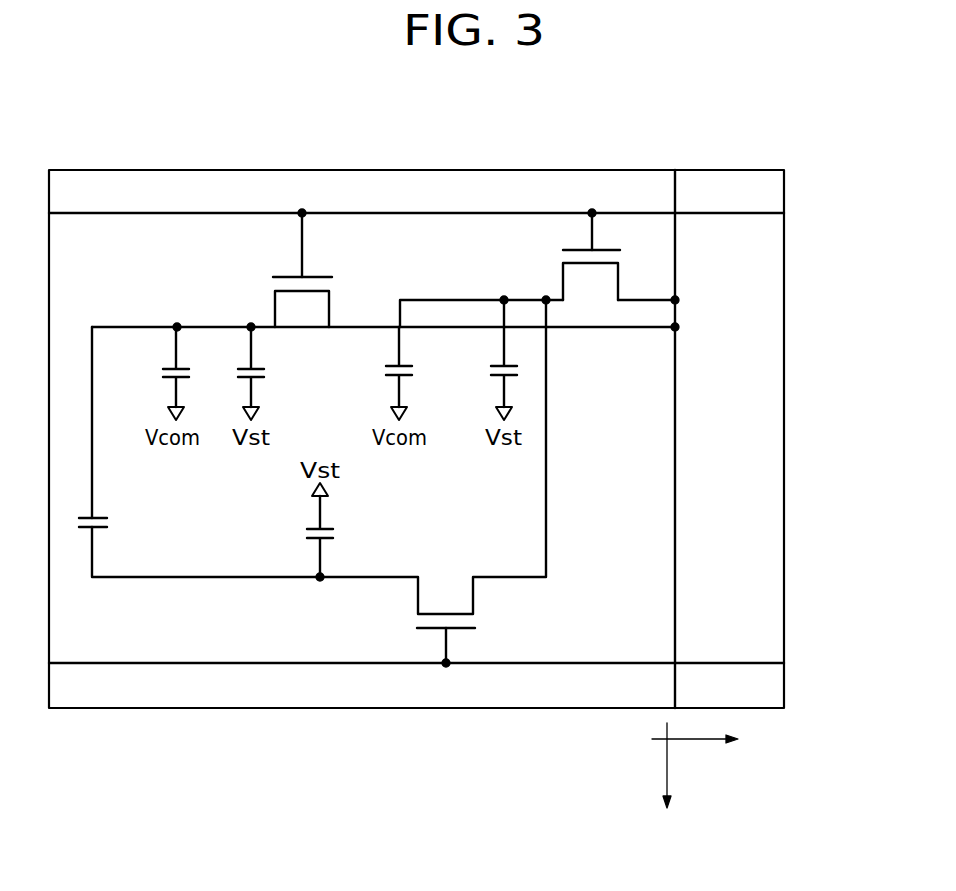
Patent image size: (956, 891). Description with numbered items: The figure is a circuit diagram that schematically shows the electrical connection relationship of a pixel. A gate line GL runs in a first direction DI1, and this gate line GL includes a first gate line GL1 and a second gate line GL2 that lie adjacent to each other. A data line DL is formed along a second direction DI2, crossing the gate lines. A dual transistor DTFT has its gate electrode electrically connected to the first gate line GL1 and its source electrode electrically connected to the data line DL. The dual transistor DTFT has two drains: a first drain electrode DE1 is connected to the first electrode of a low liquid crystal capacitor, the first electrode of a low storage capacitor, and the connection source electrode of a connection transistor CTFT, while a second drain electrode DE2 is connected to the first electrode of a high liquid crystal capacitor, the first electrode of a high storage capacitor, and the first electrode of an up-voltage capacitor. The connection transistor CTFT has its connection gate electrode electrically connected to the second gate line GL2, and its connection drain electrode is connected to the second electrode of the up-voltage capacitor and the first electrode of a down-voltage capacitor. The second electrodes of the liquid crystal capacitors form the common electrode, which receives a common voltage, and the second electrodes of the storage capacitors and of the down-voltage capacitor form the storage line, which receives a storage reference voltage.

The gate line GL is at (475, 439).
The first gate line GL1 is at (735, 213).
The second gate line GL2 is at (733, 663).
The data line DL is at (675, 191).
The dual transistor DTFT is at (344, 295).
The connection transistor CTFT is at (404, 599).
The first drain electrode DE1 is at (458, 300).
The second drain electrode DE2 is at (195, 327).
The first direction DI1 is at (717, 742).
The second direction DI2 is at (665, 783).